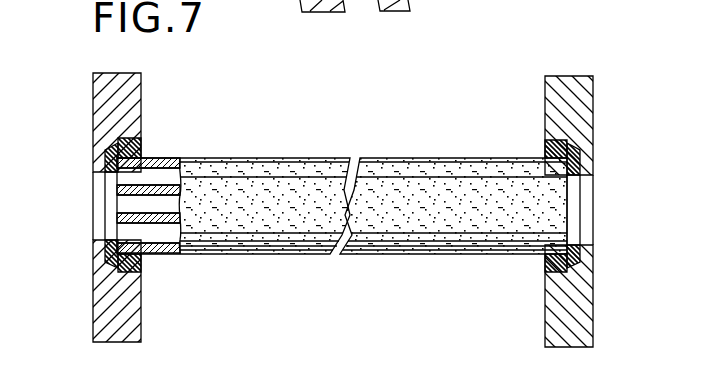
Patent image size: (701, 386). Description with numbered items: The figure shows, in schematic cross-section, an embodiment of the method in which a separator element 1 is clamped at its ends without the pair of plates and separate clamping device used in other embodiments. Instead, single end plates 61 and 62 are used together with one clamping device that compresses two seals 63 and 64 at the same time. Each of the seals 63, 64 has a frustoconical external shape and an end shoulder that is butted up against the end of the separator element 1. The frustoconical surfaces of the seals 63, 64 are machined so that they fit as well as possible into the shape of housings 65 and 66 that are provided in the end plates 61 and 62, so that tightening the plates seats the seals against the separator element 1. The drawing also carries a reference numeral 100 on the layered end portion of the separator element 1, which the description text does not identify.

The separator element 1 is at (385, 185).
The end plate 61 is at (572, 95).
The end plate 62 is at (113, 104).
The seal 63 is at (107, 163).
The seal 64 is at (550, 150).
The housing 65 is at (128, 134).
The housing 66 is at (567, 143).
The sheath bands 100 is at (153, 234).